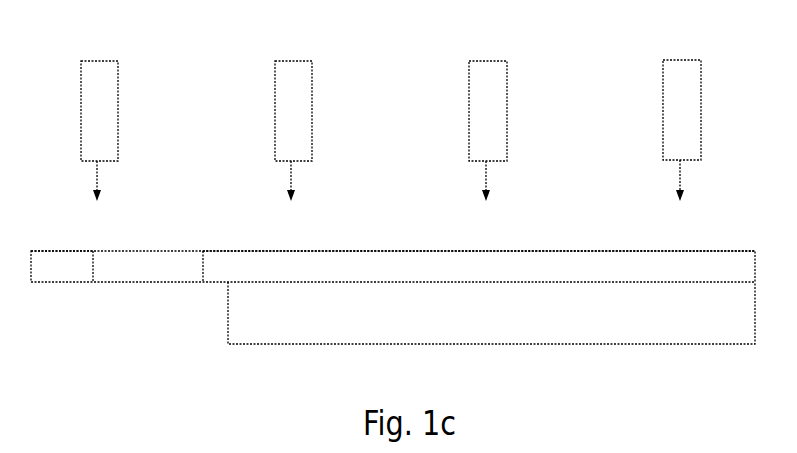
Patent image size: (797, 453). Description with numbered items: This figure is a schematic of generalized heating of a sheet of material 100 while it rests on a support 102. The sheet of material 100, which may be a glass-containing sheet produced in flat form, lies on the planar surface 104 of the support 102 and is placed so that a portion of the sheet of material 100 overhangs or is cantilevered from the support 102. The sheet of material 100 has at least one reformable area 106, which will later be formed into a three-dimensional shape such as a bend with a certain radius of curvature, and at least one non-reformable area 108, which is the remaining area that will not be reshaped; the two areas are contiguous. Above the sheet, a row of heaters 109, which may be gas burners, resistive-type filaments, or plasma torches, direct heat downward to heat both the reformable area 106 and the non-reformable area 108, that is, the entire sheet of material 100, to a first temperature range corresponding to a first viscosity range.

The sheet of material 100 is at (393, 284).
The support 102 is at (479, 332).
The planar surface 104 is at (605, 281).
The reformable area 106 is at (186, 258).
The non-reformable area 108 is at (62, 259).
The heaters 109 is at (103, 72).